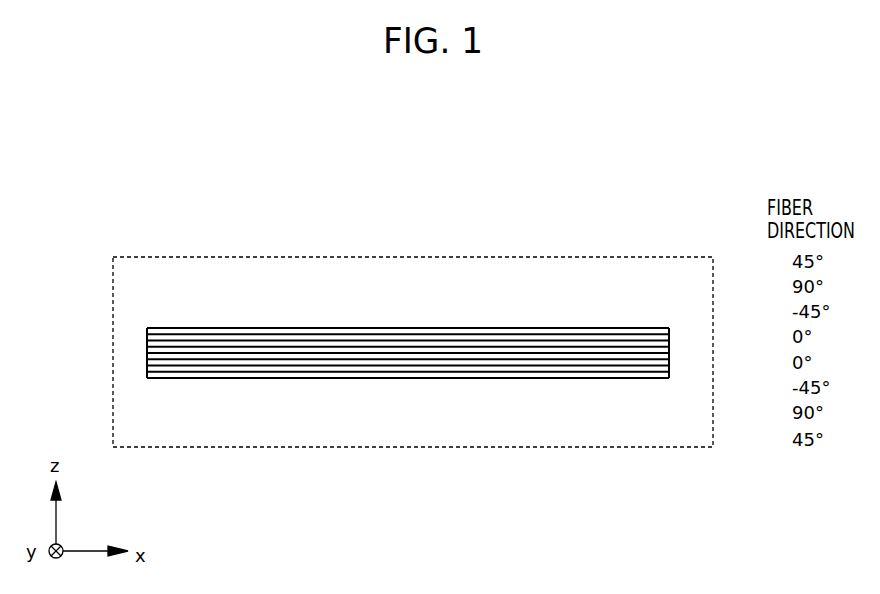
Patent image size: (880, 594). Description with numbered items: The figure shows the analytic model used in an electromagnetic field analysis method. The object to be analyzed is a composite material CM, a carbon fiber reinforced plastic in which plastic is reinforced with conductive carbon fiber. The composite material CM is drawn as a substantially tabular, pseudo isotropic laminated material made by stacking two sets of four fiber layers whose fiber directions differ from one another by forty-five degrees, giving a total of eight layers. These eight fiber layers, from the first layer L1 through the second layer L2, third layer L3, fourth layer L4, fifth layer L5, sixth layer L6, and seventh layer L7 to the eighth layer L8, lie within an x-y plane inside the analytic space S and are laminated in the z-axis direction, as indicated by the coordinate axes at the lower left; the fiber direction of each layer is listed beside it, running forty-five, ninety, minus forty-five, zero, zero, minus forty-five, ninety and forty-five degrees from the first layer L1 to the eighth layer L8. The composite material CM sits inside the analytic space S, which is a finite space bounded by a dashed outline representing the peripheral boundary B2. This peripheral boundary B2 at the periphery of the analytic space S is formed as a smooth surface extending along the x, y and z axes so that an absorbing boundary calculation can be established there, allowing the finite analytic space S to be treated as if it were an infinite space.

The composite material CM is at (250, 293).
The analytic space S is at (487, 282).
The peripheral boundary B2 is at (523, 448).
The first layer L1 is at (669, 331).
The second layer L2 is at (669, 337).
The third layer L3 is at (669, 344).
The fourth layer L4 is at (669, 350).
The fifth layer L5 is at (669, 356).
The sixth layer L6 is at (669, 362).
The seventh layer L7 is at (669, 369).
The eighth layer L8 is at (669, 375).